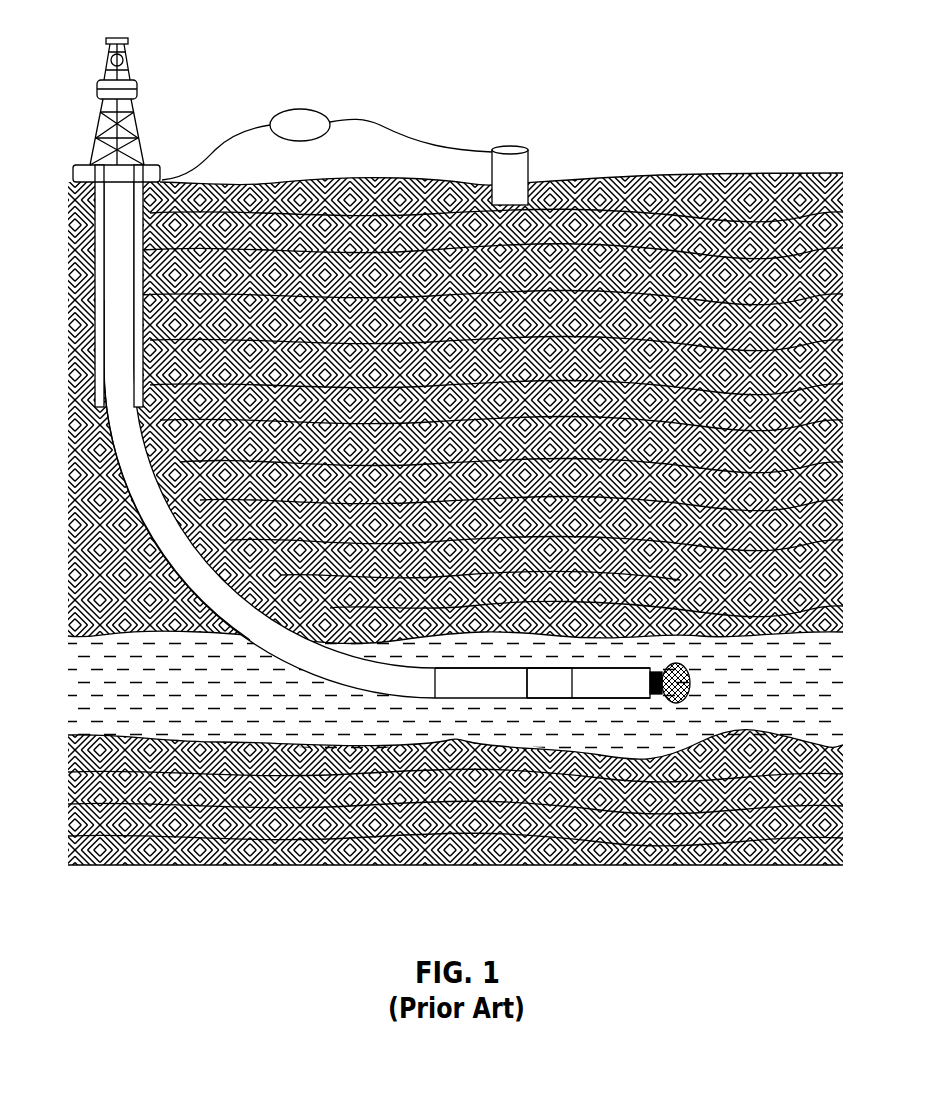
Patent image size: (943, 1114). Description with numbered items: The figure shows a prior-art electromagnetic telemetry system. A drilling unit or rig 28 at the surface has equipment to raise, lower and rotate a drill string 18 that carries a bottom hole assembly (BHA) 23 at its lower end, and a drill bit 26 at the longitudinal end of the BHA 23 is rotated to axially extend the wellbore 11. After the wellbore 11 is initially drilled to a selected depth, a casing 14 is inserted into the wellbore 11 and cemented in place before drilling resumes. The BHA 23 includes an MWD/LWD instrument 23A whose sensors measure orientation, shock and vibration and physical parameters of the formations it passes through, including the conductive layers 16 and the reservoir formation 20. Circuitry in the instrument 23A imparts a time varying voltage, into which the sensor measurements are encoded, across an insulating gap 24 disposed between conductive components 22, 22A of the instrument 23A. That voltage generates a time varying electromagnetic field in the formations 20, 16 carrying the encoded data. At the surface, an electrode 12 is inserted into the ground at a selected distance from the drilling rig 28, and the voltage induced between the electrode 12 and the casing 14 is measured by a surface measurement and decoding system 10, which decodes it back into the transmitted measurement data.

The surface measurement and decoding system 10 is at (338, 120).
The wellbore 11 is at (122, 478).
The electrode 12 is at (532, 163).
The casing 14 is at (145, 298).
The conductive layers 16 is at (748, 183).
The drillstring 18 is at (162, 494).
The reservoir formation 20 is at (216, 696).
The conductive component 22 is at (453, 699).
The conductive component 22A is at (603, 698).
The bottom hole assembly 23 is at (480, 699).
The MWD/LWD instrument 23A is at (530, 664).
The insulating gap 24 is at (540, 698).
The drill bit 26 is at (668, 700).
The drilling unit 28 is at (112, 37).